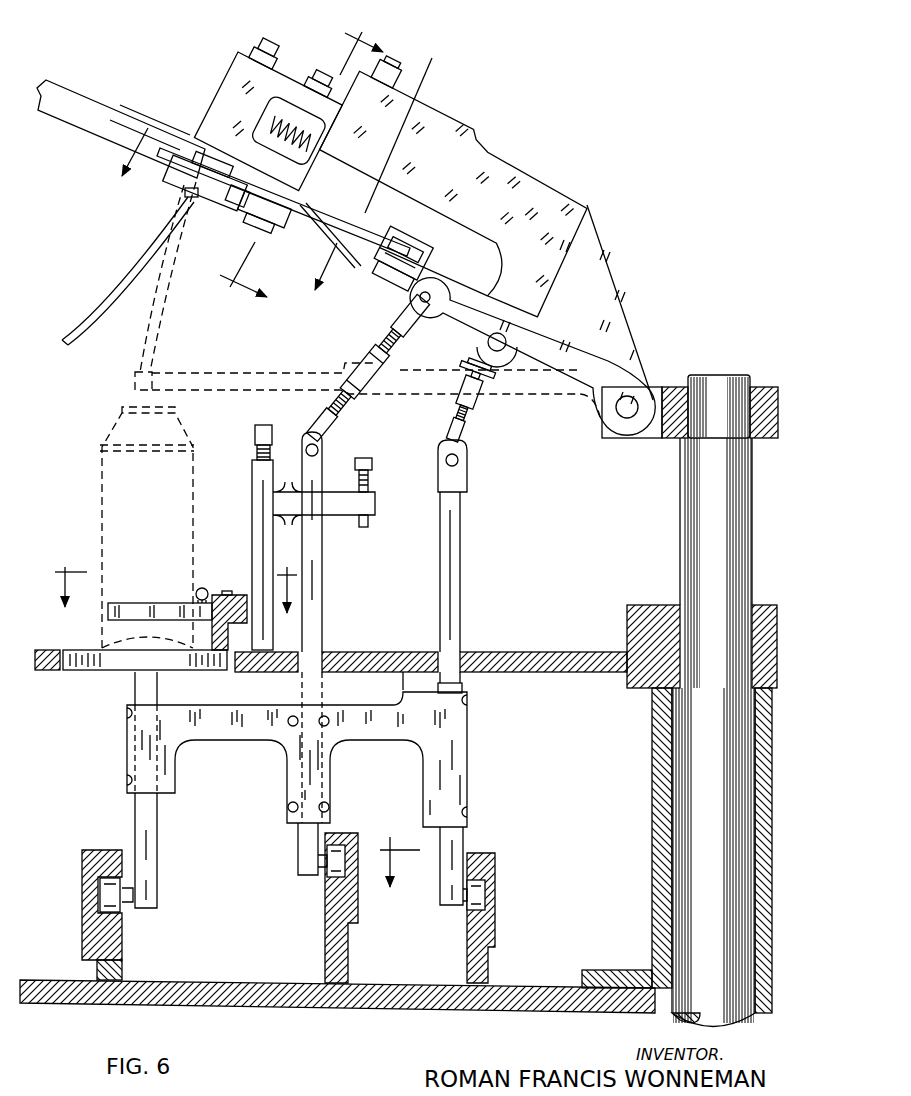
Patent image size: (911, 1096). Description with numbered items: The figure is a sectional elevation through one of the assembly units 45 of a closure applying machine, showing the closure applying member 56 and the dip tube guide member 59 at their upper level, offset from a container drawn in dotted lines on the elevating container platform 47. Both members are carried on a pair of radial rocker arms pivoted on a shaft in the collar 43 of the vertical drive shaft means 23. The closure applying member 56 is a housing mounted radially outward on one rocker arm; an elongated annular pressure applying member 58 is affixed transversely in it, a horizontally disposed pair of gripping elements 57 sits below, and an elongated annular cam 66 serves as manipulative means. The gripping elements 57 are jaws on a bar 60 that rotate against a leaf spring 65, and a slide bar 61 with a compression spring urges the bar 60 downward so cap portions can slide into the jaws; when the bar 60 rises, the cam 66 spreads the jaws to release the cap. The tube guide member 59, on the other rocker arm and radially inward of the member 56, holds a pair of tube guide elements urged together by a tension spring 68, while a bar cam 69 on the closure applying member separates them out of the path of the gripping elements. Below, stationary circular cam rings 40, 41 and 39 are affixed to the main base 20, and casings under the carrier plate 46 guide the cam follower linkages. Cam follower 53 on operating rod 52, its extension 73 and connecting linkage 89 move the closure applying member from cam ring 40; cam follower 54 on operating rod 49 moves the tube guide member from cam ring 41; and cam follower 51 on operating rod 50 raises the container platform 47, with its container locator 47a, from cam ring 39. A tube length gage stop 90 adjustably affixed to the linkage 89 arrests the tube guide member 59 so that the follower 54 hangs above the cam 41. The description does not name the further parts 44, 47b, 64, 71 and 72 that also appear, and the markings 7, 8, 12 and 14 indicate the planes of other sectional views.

The main base 20 is at (252, 1010).
The vertical drive shaft means 23 is at (683, 509).
The stationary cam ring 39 is at (120, 960).
The stationary cam ring 40 is at (487, 972).
The stationary cam ring 41 is at (340, 957).
The collar 43 is at (671, 385).
The bearing block 44 is at (644, 604).
The assembly unit 45 is at (586, 206).
The carrier plate 46 is at (498, 653).
The container platform 47 is at (113, 673).
The container locator 47a is at (110, 613).
The guide roller 47b is at (203, 590).
The operating rod 49 is at (313, 603).
The operating rod 50 is at (153, 843).
The cam follower 51 is at (126, 913).
The operating rod 52 is at (457, 842).
The cam follower 53 is at (467, 906).
The cam follower 54 is at (324, 873).
The closure applying member 56 is at (603, 289).
The gripping elements 57 is at (236, 206).
The pressure applying member 58 is at (200, 132).
The dip tube guide member 59 is at (600, 358).
The bar 60 is at (294, 258).
The slide bar 61 is at (393, 60).
The pin 64 is at (409, 280).
The leaf spring 65 is at (298, 250).
The elongated annular cam 66 is at (311, 77).
The tension spring 68 is at (404, 232).
The bar cam 69 is at (348, 268).
The post 71 is at (257, 507).
The adjusting screw 72 is at (365, 520).
The operating rod extension 73 is at (460, 596).
The connecting linkage 89 is at (467, 445).
The tube length gage stop 90 is at (500, 380).
The section line 7 is at (287, 158).
The section line 8 is at (176, 574).
The section line 12 is at (397, 848).
The section line 14 is at (290, 155).